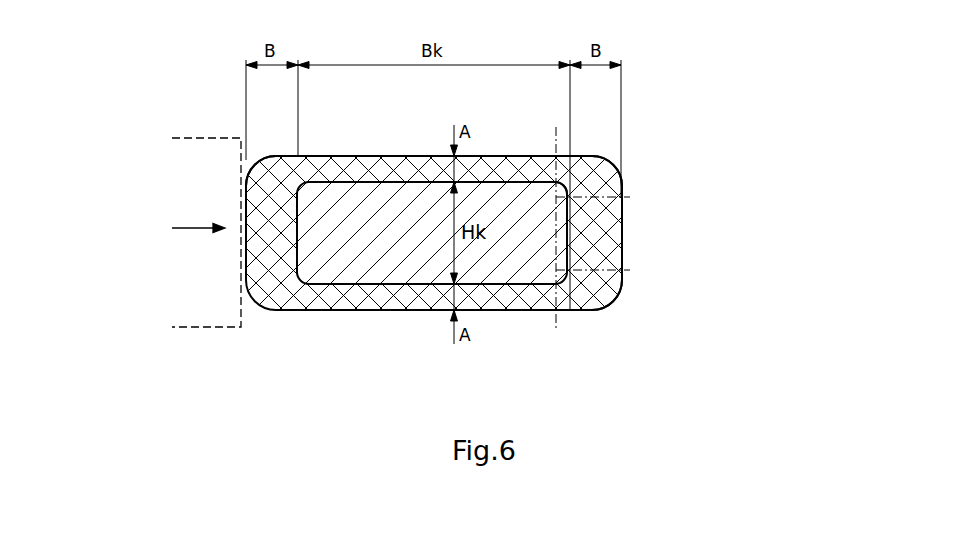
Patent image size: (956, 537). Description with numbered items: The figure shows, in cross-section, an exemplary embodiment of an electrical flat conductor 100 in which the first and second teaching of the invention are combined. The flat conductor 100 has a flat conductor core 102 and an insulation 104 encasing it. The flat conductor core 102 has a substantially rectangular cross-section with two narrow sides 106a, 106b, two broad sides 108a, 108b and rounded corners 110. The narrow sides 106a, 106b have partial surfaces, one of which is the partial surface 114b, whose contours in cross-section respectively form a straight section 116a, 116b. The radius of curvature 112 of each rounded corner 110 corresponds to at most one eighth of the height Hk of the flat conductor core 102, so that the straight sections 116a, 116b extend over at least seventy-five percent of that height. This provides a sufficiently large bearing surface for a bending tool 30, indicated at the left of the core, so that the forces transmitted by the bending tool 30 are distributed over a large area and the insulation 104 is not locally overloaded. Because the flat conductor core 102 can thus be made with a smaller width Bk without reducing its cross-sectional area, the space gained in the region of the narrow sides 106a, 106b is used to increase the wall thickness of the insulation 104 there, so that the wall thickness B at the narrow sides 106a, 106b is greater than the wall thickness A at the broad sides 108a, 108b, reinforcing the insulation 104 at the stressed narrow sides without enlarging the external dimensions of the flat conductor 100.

The electrical flat conductor 100 is at (690, 85).
The flat conductor core 102 is at (503, 206).
The insulation 104 is at (394, 162).
The narrow side 106a is at (594, 254).
The narrow side 106b is at (294, 254).
The broad side 108a is at (334, 160).
The broad side 108b is at (373, 285).
The rounded corner 110 is at (603, 302).
The radius of curvature 112 is at (575, 181).
The partial surface 114b is at (592, 237).
The straight section 116a is at (595, 221).
The straight section 116b is at (296, 218).
The bending tool 30 is at (200, 330).